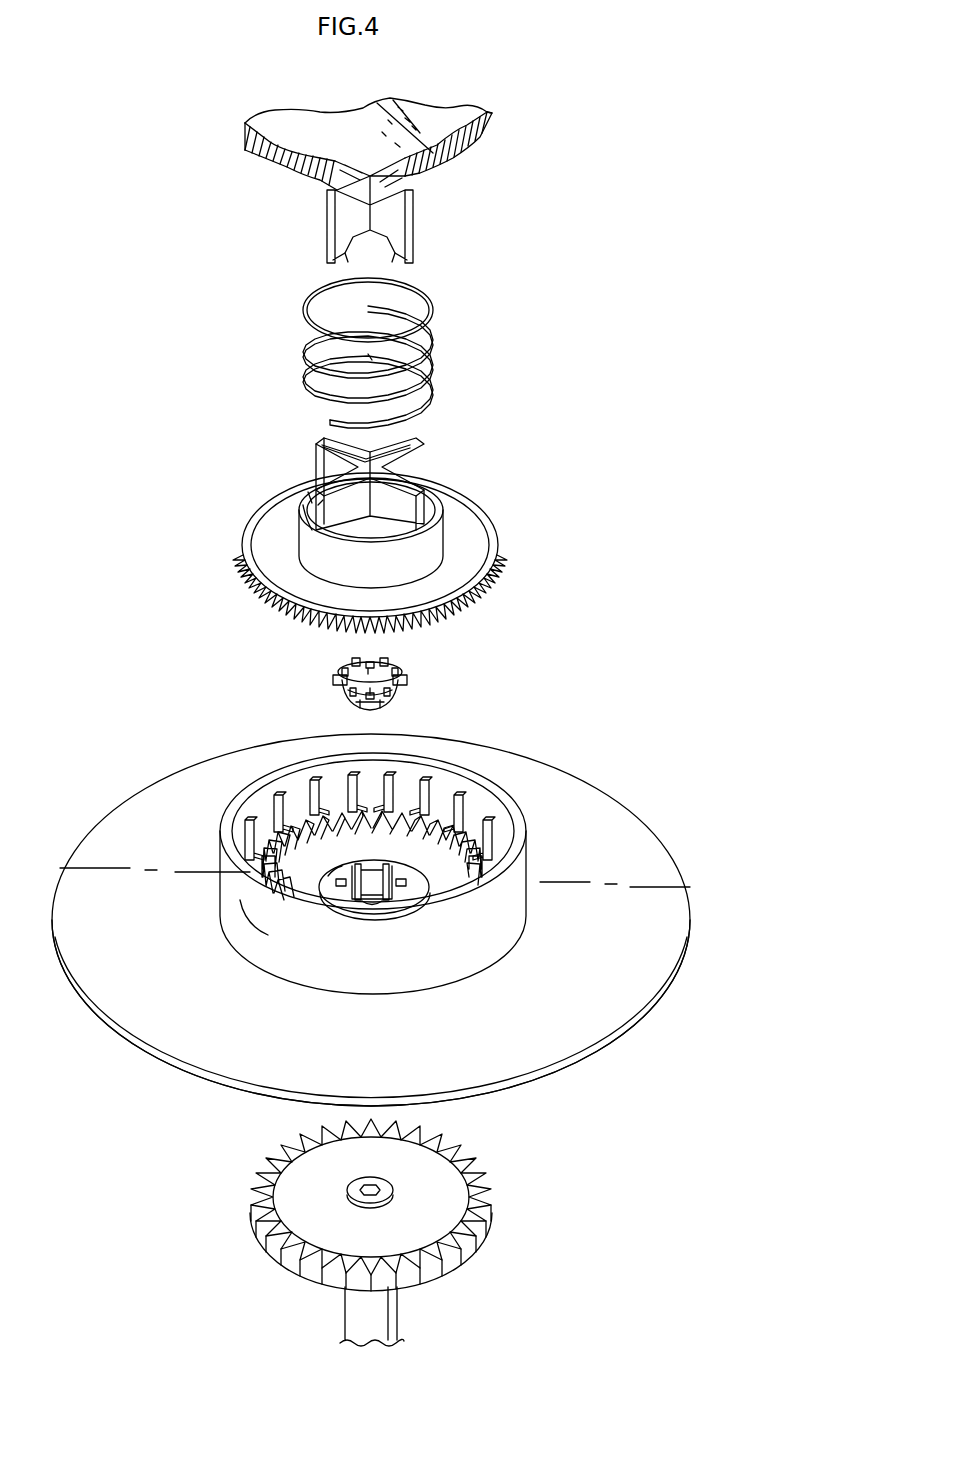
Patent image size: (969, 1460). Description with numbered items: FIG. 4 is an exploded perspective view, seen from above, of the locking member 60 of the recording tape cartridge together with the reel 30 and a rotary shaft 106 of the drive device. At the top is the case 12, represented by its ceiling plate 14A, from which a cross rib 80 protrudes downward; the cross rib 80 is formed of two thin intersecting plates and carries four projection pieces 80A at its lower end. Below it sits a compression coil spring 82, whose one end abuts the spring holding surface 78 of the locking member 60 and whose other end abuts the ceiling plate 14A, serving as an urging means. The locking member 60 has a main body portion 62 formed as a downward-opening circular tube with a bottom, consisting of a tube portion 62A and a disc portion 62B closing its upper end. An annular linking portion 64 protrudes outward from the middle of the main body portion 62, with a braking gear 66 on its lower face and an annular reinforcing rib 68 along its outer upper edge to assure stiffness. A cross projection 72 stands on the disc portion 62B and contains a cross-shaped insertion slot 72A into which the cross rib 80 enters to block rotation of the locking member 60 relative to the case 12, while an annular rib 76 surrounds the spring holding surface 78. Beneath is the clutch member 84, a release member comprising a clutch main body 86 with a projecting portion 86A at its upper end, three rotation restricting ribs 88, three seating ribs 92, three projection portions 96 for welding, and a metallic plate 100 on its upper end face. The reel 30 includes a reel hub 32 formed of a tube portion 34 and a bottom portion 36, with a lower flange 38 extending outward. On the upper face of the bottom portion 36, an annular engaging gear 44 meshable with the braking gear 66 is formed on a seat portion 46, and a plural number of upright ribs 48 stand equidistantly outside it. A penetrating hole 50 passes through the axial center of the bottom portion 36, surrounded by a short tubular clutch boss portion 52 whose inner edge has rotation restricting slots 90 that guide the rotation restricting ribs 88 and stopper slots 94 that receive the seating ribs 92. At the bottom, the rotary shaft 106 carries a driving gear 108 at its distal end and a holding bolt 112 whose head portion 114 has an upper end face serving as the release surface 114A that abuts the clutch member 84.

The case 12 is at (434, 144).
The ceiling plate 14A is at (470, 125).
The cross rib 80 is at (393, 215).
The projection pieces 80A is at (395, 258).
The compression coil spring 82 is at (461, 339).
The locking member 60 is at (355, 515).
The main body portion 62 is at (279, 537).
The tube portion 62A is at (300, 540).
The disc portion 62B is at (312, 505).
The linking portion 64 is at (398, 536).
The braking gear 66 is at (462, 622).
The reinforcing rib 68 is at (487, 513).
The cross projection 72 is at (426, 464).
The insertion slot 72A is at (402, 440).
The rib 76 is at (320, 470).
The spring holding surface 78 is at (311, 500).
The clutch member 84 is at (408, 682).
The clutch main body 86 is at (386, 702).
The projecting portion 86A is at (394, 688).
The rotation restricting ribs 88 is at (396, 670).
The seating ribs 92 is at (336, 678).
The projection portions 96 is at (372, 702).
The metallic plate 100 is at (366, 662).
The reel 30 is at (405, 894).
The reel hub 32 is at (440, 838).
The tube portion 34 is at (498, 787).
The bottom portion 36 is at (450, 795).
The lower flange 38 is at (655, 945).
The engaging gear 44 is at (248, 905).
The seat portion 46 is at (303, 880).
The upright ribs 48 is at (490, 838).
The penetrating hole 50 is at (377, 896).
The clutch boss portion 52 is at (331, 898).
The rotation restricting slots 90 is at (392, 884).
The stopper slots 94 is at (373, 892).
The rotary shaft 106 is at (370, 1230).
The driving gear 108 is at (486, 1190).
The holding bolt 112 is at (332, 1230).
The head portion 114 is at (332, 1230).
The release surface 114A is at (386, 1184).